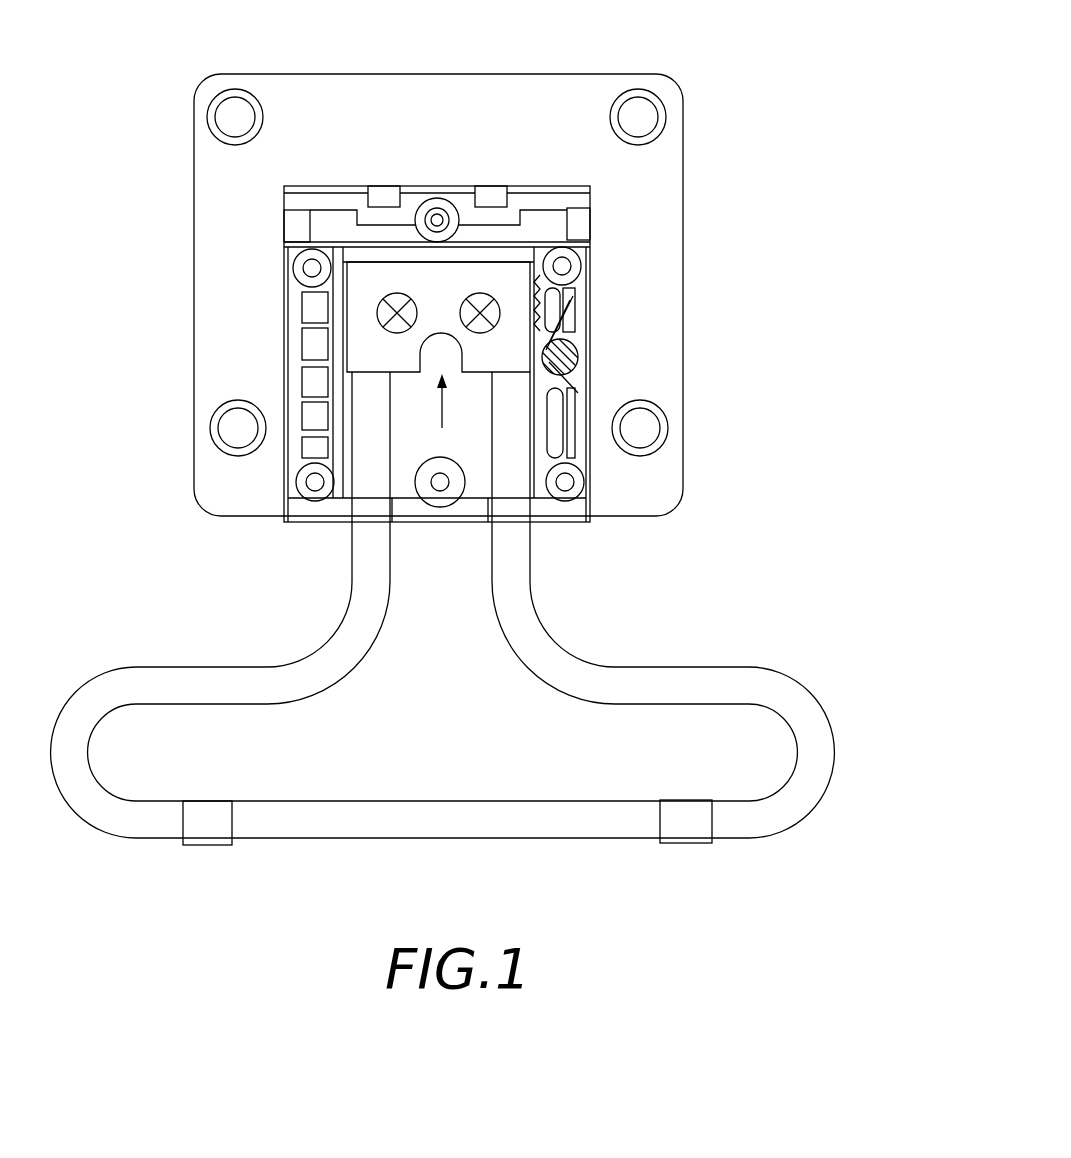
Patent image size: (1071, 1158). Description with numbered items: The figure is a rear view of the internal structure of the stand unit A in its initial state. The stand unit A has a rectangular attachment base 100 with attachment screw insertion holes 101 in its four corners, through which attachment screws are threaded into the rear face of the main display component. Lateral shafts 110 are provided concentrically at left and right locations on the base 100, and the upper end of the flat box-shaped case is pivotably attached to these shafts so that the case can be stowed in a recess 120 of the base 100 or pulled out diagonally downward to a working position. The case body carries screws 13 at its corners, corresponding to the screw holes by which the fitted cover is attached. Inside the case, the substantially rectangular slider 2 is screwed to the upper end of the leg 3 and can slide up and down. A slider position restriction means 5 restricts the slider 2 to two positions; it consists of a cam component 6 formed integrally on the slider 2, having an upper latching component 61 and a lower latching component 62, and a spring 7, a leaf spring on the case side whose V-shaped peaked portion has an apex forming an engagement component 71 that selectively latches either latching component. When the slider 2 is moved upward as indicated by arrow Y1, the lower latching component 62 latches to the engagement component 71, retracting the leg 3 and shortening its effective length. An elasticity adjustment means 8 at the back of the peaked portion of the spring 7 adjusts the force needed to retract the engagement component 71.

The attachment base 100 is at (588, 74).
The attachment screw insertion holes 101 is at (223, 113).
The stand unit A is at (702, 105).
The lateral shafts 110 is at (293, 227).
The upper latching component 61 is at (527, 255).
The fixing screws 13 is at (312, 268).
The slider 2 is at (352, 262).
The recess 120 is at (287, 333).
The slider position restriction means 5 is at (605, 299).
The cam component 6 is at (575, 290).
The spring 7 is at (633, 268).
The lower latching component 62 is at (567, 333).
The elasticity adjustment means 8 is at (578, 363).
The engagement component 71 is at (545, 388).
The arrow Y1 is at (428, 401).
The leg 3 is at (728, 665).